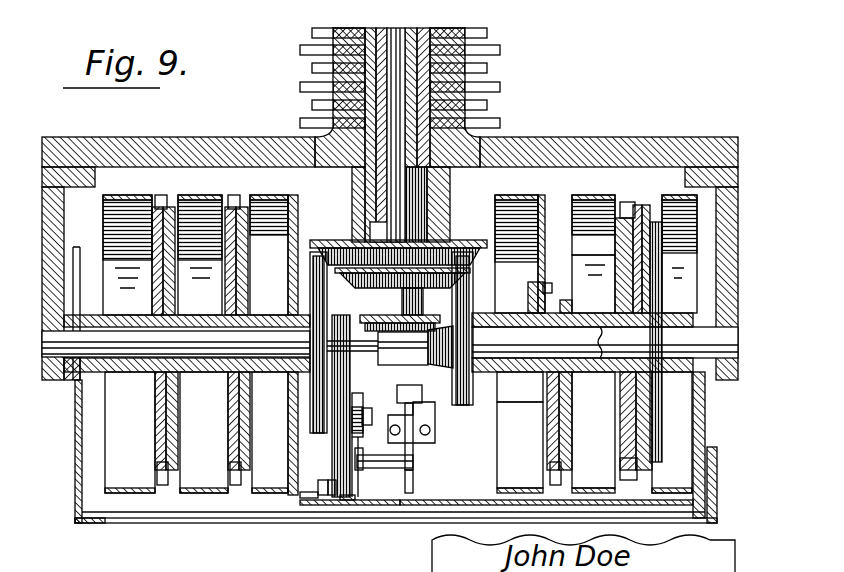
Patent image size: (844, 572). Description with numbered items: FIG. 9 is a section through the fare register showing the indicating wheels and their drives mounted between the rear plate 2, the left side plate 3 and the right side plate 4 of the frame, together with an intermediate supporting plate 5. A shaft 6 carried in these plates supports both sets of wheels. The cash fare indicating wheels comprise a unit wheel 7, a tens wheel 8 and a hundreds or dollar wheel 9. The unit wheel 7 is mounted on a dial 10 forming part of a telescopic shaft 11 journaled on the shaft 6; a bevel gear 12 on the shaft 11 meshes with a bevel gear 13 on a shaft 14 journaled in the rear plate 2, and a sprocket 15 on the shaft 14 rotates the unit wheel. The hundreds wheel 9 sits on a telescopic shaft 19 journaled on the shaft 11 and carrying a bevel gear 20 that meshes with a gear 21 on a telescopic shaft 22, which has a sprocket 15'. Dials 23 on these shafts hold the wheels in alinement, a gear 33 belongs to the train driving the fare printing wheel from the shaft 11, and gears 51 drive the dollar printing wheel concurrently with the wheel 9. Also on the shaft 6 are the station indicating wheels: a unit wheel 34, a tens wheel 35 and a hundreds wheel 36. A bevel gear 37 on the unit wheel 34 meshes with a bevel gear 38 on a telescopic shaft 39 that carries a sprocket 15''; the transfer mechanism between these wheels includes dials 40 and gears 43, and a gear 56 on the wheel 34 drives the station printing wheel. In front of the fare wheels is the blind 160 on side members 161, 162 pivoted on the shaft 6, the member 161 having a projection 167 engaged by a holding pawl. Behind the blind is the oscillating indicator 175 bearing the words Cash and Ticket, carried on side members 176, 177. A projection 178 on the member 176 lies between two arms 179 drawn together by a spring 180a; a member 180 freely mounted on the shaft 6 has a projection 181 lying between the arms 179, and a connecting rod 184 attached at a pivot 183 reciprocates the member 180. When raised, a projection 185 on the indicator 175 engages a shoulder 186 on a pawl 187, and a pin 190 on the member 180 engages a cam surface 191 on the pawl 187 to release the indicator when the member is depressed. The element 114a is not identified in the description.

The rear plate 2 is at (620, 138).
The left side plate 3 is at (52, 273).
The right side plate 4 is at (738, 256).
The intermediate supporting plate 5 is at (377, 348).
The shaft 6 is at (44, 341).
The unit wheel 7 is at (672, 432).
The tens wheel 8 is at (593, 430).
The hundreds or dollar wheel 9 is at (520, 445).
The dial 10 is at (652, 400).
The telescopic shaft 11 is at (605, 342).
The bevel gear 12 is at (472, 302).
The bevel gear 13 is at (360, 318).
The shaft 14 is at (500, 66).
The sprocket 15 is at (290, 44).
The sprocket 15' is at (300, 64).
The sprocket 15'' is at (513, 106).
The telescopic shaft 19 is at (520, 395).
The bevel gear 20 is at (438, 366).
The gear 21 is at (340, 282).
The telescopic shaft 22 is at (312, 122).
The alining dial 23 is at (500, 87).
The gear 33 is at (565, 300).
The unit wheel 34 is at (270, 432).
The tens wheel 35 is at (204, 432).
The hundreds wheel 36 is at (130, 432).
The bevel gear 37 is at (290, 416).
The bevel gear 38 is at (313, 247).
The telescopic shaft 39 is at (372, 178).
The dial 40 is at (237, 196).
The gear 43 is at (162, 196).
The gear 51 is at (548, 283).
The gear 56 is at (310, 392).
The base plate 114a is at (168, 523).
The blind or shield 160 is at (584, 499).
The side member 161 is at (75, 431).
The side member 162 is at (712, 470).
The projection 167 is at (77, 247).
The indicator 175 is at (515, 499).
The side member 176 is at (332, 497).
The side member 177 is at (706, 409).
The projection 178 is at (318, 497).
The arm 179 is at (345, 506).
The member 180 is at (370, 506).
The spring 180a is at (231, 436).
The projection 181 is at (340, 500).
The pivot 183 is at (352, 405).
The connecting rod 184 is at (355, 408).
The projection 185 is at (424, 395).
The shoulder 186 is at (414, 448).
The pawl 187 is at (395, 426).
The pin 190 is at (384, 470).
The cam surface 191 is at (415, 483).